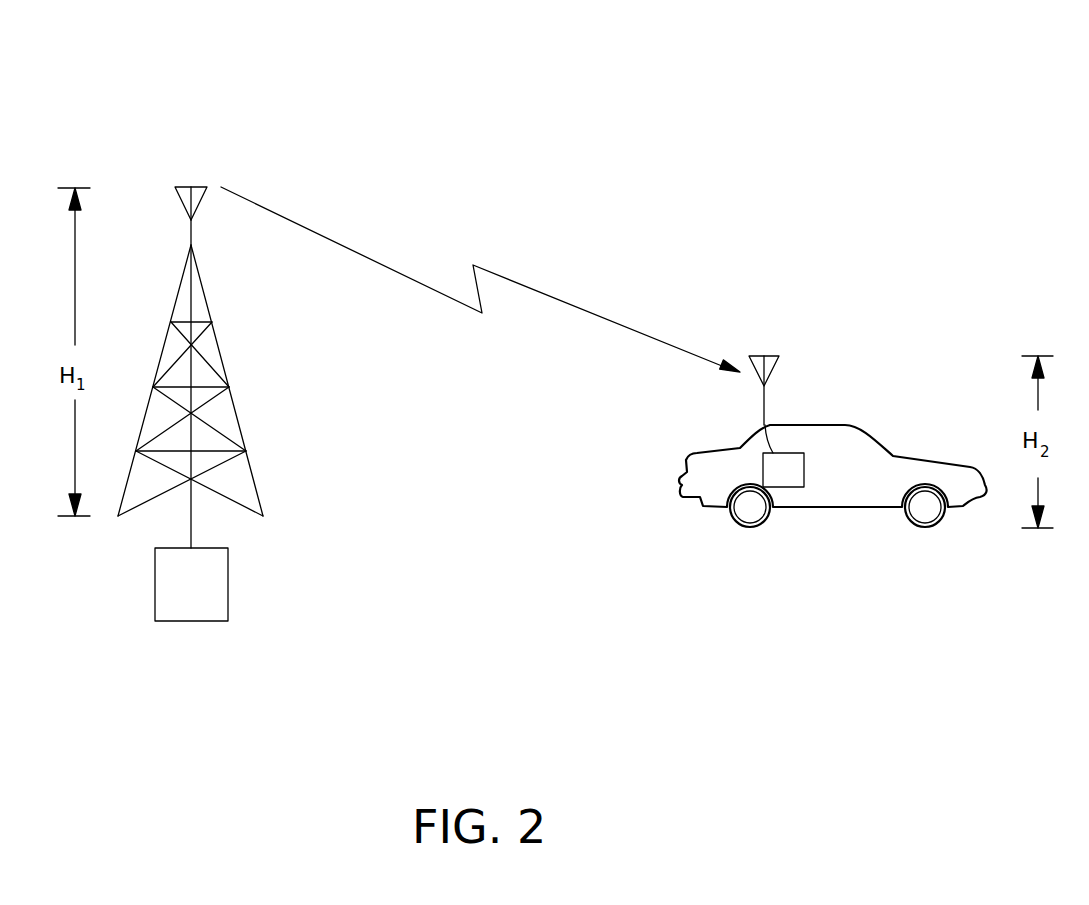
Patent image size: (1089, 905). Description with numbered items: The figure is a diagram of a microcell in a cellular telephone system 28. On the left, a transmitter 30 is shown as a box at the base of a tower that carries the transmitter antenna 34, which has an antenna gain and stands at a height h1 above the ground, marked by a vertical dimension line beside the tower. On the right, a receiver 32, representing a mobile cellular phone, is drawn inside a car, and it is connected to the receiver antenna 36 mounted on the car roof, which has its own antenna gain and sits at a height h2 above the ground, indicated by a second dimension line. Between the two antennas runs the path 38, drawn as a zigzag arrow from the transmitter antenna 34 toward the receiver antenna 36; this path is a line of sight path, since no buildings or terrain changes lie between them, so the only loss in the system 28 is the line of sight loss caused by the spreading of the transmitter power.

The cellular telephone system 28 is at (713, 110).
The transmitter 30 is at (217, 621).
The receiver 32 is at (788, 487).
The transmitter antenna 34 is at (184, 187).
The receiver antenna 36 is at (767, 355).
The path 38 is at (547, 293).